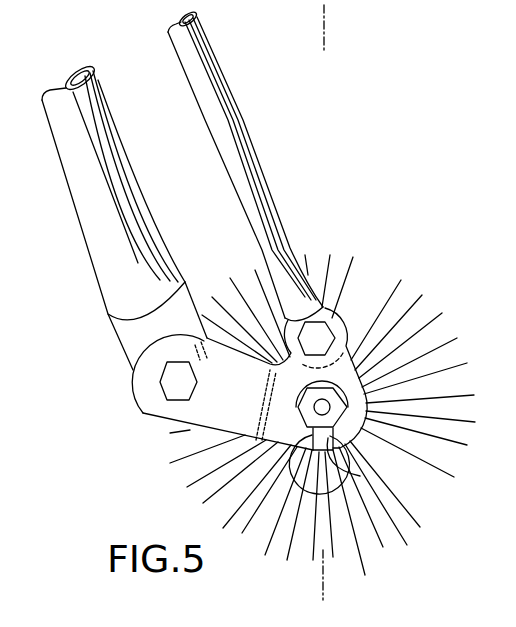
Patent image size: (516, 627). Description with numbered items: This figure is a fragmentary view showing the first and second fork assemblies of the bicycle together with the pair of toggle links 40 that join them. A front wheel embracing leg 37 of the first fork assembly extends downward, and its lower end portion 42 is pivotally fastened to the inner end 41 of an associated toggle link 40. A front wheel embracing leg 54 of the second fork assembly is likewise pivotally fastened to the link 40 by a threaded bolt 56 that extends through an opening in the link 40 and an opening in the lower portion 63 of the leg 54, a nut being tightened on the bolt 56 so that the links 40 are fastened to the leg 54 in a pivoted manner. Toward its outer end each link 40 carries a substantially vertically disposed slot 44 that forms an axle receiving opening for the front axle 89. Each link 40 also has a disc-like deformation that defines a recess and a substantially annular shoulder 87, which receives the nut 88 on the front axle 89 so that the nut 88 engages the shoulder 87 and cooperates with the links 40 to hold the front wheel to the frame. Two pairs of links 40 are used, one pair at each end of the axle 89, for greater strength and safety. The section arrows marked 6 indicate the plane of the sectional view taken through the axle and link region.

The front wheel embracing leg 37 is at (108, 237).
The lower end portion 42 is at (115, 278).
The inner end 41 is at (147, 370).
The toggle link 40 is at (143, 413).
The front wheel embracing leg 54 is at (246, 137).
The lower portion 63 is at (290, 267).
The threaded bolt 56 is at (160, 381).
The front axle 89 is at (316, 404).
The annular shoulder 87 is at (308, 433).
The nut 88 is at (330, 394).
The slot 44 is at (360, 476).
The section line 6- 6 is at (342, 5).